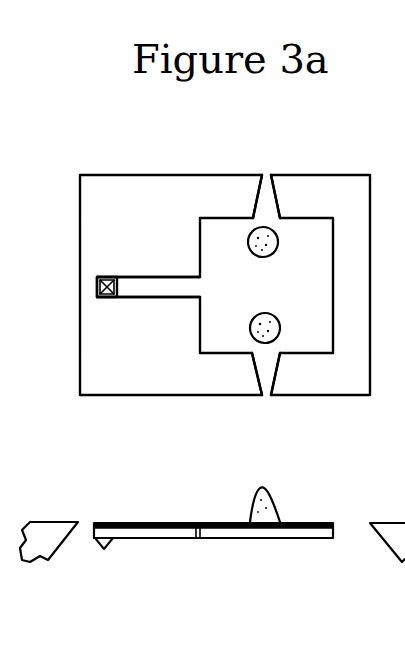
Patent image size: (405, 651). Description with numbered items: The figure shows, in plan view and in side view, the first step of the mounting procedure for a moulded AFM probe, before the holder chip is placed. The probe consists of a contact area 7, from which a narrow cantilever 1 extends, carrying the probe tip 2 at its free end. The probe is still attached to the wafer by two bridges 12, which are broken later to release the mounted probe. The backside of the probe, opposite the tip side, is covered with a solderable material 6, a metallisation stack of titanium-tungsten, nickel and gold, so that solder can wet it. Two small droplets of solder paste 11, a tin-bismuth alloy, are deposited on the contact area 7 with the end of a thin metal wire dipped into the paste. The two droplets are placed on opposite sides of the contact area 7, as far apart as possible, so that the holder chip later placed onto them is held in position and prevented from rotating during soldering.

The cantilever 1 is at (142, 276).
The probe tip 2 is at (96, 297).
The solderable material 6 is at (153, 522).
The contact area 7 is at (215, 330).
The solder paste 11 is at (268, 247).
The bridges 12 is at (258, 200).